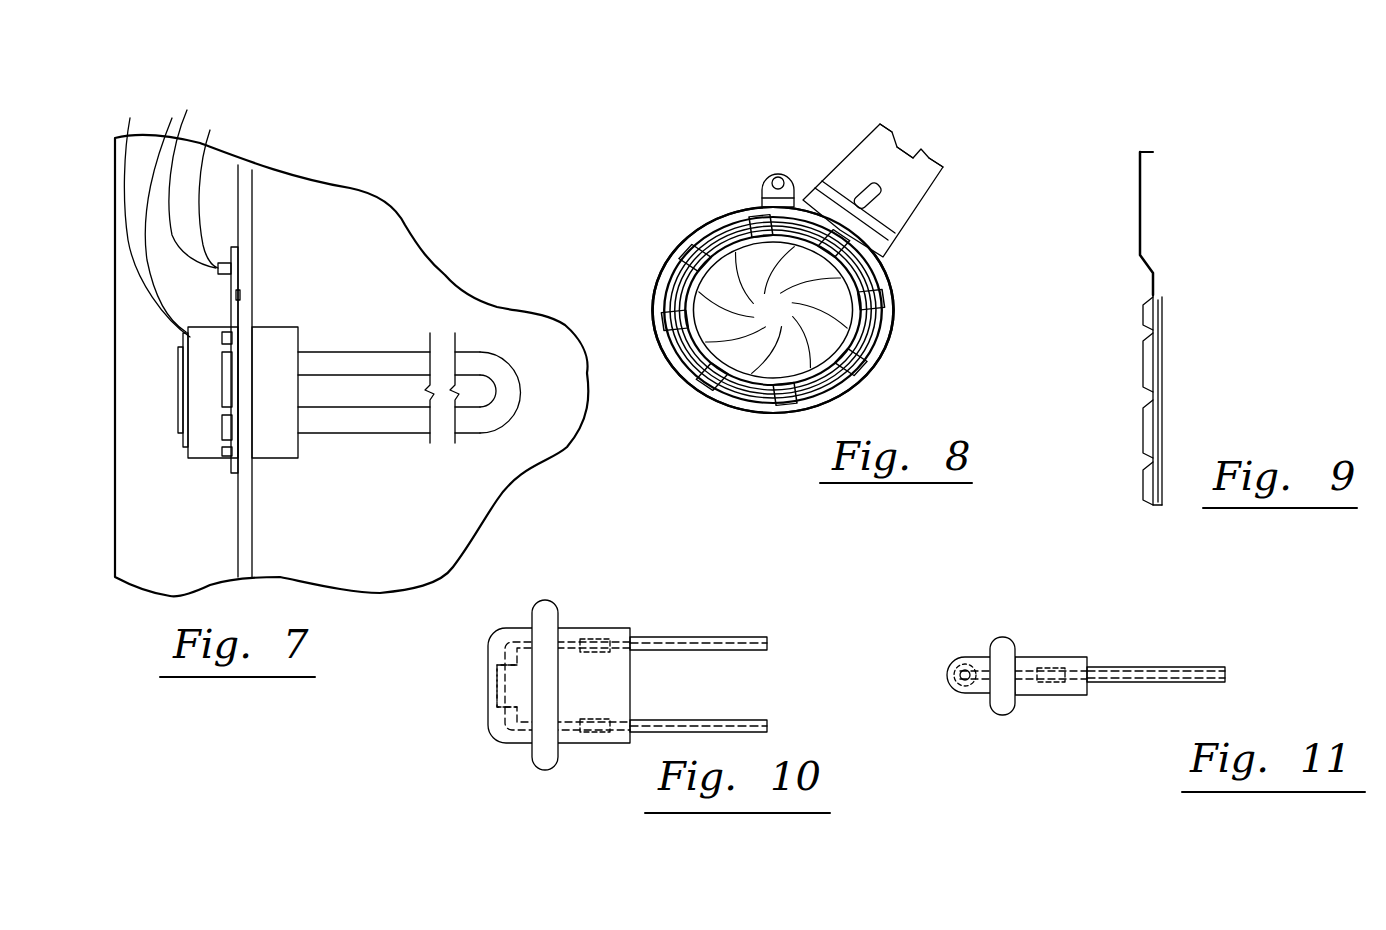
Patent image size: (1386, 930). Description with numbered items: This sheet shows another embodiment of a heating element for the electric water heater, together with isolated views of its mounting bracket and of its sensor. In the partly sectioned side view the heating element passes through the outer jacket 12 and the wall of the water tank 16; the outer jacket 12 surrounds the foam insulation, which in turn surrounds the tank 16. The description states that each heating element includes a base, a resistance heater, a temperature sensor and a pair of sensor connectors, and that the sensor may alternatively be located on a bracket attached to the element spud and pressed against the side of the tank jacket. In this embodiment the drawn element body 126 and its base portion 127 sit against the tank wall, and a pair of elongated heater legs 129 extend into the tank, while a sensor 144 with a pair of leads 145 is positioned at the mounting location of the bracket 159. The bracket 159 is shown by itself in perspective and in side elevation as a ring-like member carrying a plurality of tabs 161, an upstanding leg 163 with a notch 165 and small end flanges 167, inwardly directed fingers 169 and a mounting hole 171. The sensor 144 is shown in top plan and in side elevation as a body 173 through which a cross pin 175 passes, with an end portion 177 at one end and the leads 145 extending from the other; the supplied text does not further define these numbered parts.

In FIG. 7, the outer jacket 12 is at (114, 430).
In FIG. 7, the water tank 16 is at (255, 223).
In FIG. 7, the lamp housing 126 is at (281, 472).
In FIG. 7, the lamp socket 127 is at (203, 447).
In FIG. 7, the terminal pins 129 is at (393, 353).
In FIG. 7, the terminal assembly 144 is at (222, 265).
In FIG. 10, the terminal assembly 144 is at (680, 600).
In FIG. 11, the terminal assembly 144 is at (1058, 715).
In FIG. 7, the lead wires 145 is at (214, 156).
In FIG. 10, the lead wires 145 is at (752, 655).
In FIG. 11, the lead wires 145 is at (1156, 674).
In FIG. 7, the retaining ring 159 is at (237, 297).
In FIG. 8, the retaining ring 159 is at (922, 288).
In FIG. 9, the retaining ring 159 is at (1178, 262).
In FIG. 8, the retaining tabs 161 is at (868, 362).
In FIG. 9, the retaining tabs 161 is at (1163, 362).
In FIG. 8, the terminal housing 163 is at (925, 198).
In FIG. 9, the terminal housing 163 is at (1158, 200).
In FIG. 8, the latch notch 165 is at (904, 150).
In FIG. 8, the flange tabs 167 is at (885, 124).
In FIG. 9, the flange tabs 167 is at (1146, 150).
In FIG. 8, the spring fingers 169 is at (773, 310).
In FIG. 8, the mounting hole 171 is at (778, 175).
In FIG. 8, the terminal body 173 is at (764, 187).
In FIG. 10, the terminal body 173 is at (602, 628).
In FIG. 11, the terminal body 173 is at (1083, 657).
In FIG. 10, the locking pin 175 is at (560, 576).
In FIG. 11, the locking pin 175 is at (1002, 637).
In FIG. 10, the terminal contact end 177 is at (488, 693).